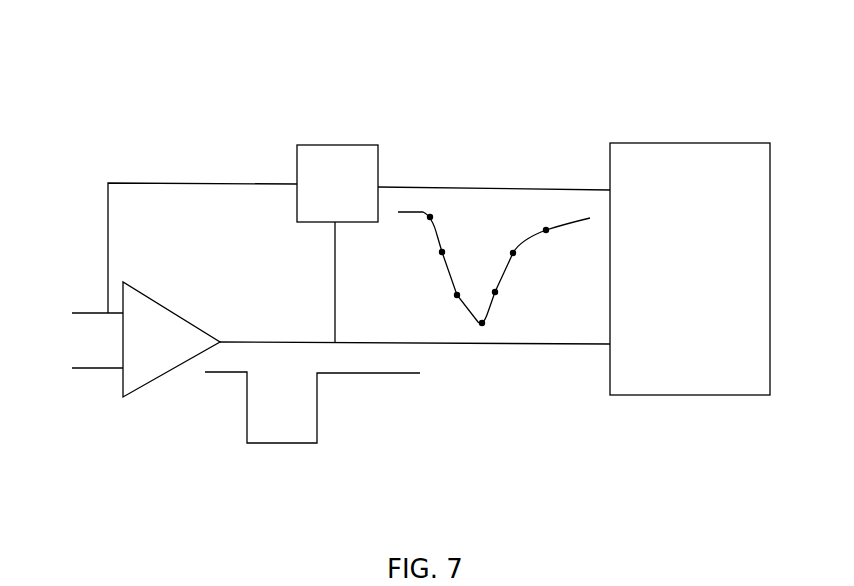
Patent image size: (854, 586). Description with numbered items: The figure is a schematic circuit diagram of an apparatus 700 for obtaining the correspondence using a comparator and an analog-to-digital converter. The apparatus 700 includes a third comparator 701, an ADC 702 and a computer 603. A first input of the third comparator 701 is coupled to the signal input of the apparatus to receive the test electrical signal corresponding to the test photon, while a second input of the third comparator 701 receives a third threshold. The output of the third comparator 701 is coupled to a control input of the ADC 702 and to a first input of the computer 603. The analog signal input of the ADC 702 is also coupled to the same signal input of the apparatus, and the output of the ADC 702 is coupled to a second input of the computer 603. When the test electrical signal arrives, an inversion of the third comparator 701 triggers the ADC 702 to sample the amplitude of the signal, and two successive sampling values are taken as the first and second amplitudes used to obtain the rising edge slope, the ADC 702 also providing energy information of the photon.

The apparatus 700 is at (163, 136).
The third comparator 701 is at (171, 339).
The analog-to-digital converter 702 is at (337, 183).
The computer 603 is at (690, 269).